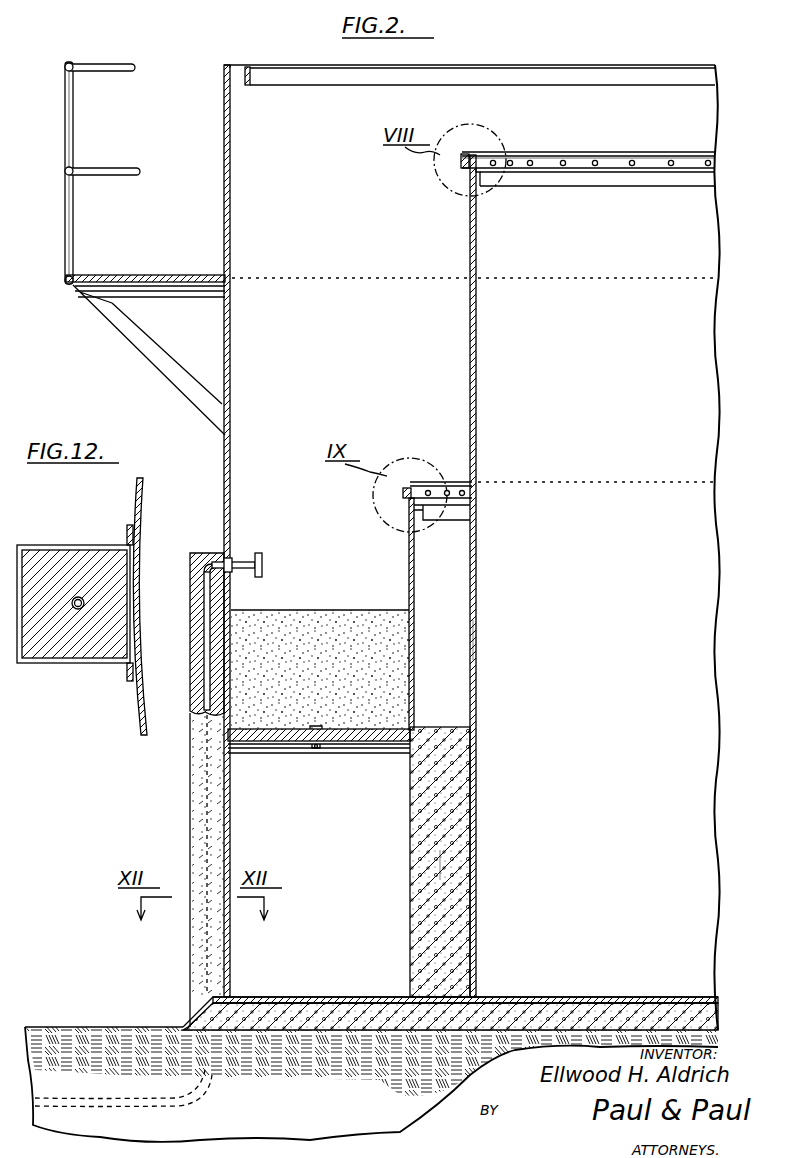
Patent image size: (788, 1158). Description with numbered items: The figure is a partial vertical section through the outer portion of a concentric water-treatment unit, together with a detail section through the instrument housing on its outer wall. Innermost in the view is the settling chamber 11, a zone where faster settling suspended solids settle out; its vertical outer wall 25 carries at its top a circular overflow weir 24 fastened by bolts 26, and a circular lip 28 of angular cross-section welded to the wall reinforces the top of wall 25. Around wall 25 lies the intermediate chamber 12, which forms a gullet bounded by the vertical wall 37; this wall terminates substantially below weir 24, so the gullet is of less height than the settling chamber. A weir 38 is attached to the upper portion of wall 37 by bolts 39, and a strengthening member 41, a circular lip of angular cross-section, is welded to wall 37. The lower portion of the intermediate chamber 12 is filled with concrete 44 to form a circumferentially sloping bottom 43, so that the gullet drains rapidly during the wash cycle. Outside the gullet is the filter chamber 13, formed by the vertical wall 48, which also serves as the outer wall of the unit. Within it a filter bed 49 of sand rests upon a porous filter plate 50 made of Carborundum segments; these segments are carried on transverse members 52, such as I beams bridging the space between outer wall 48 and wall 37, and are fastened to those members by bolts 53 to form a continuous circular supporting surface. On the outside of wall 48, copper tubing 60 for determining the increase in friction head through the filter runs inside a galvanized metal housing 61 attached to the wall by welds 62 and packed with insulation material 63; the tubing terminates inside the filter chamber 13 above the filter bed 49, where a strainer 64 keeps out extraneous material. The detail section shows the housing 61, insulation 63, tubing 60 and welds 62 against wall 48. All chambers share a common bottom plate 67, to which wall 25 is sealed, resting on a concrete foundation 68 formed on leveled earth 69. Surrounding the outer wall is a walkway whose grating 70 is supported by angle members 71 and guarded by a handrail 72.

In FIG. 2, the settling chamber 11 is at (476, 547).
In FIG. 2, the intermediate chamber 12 is at (455, 637).
In FIG. 2, the filter chamber 13 is at (297, 516).
In FIG. 2, the overflow weir 24 is at (468, 153).
In FIG. 2, the vertical outer wall 25 is at (470, 234).
In FIG. 2, the bolts 26 is at (630, 161).
In FIG. 2, the circular lip 28 is at (540, 178).
In FIG. 2, the vertical wall 37 is at (409, 557).
In FIG. 2, the weir 38 is at (408, 482).
In FIG. 2, the bolts 39 is at (403, 494).
In FIG. 2, the strengthening member 41 is at (452, 521).
In FIG. 2, the sloping bottom 43 is at (438, 726).
In FIG. 2, the concrete fill 44 is at (462, 862).
In FIG. 2, the vertical wall 48 is at (230, 462).
In FIG. 12, the vertical wall 48 is at (137, 718).
In FIG. 2, the filter bed 49 is at (297, 612).
In FIG. 2, the porous filter plate 50 is at (355, 741).
In FIG. 2, the transverse members 52 is at (388, 755).
In FIG. 2, the bolts 53 is at (316, 752).
In FIG. 2, the copper tubing 60 is at (203, 668).
In FIG. 12, the copper tubing 60 is at (75, 596).
In FIG. 2, the galvanized metal housing 61 is at (204, 586).
In FIG. 12, the galvanized metal housing 61 is at (60, 664).
In FIG. 12, the welds 62 is at (127, 528).
In FIG. 12, the insulation material 63 is at (38, 560).
In FIG. 2, the strainer 64 is at (262, 565).
In FIG. 2, the bottom plate 67 is at (550, 997).
In FIG. 2, the concrete foundation 68 is at (634, 1010).
In FIG. 2, the leveled earth 69 is at (78, 1036).
In FIG. 2, the grating 70 is at (145, 275).
In FIG. 2, the angle members 71 is at (130, 330).
In FIG. 2, the handrail 72 is at (65, 152).